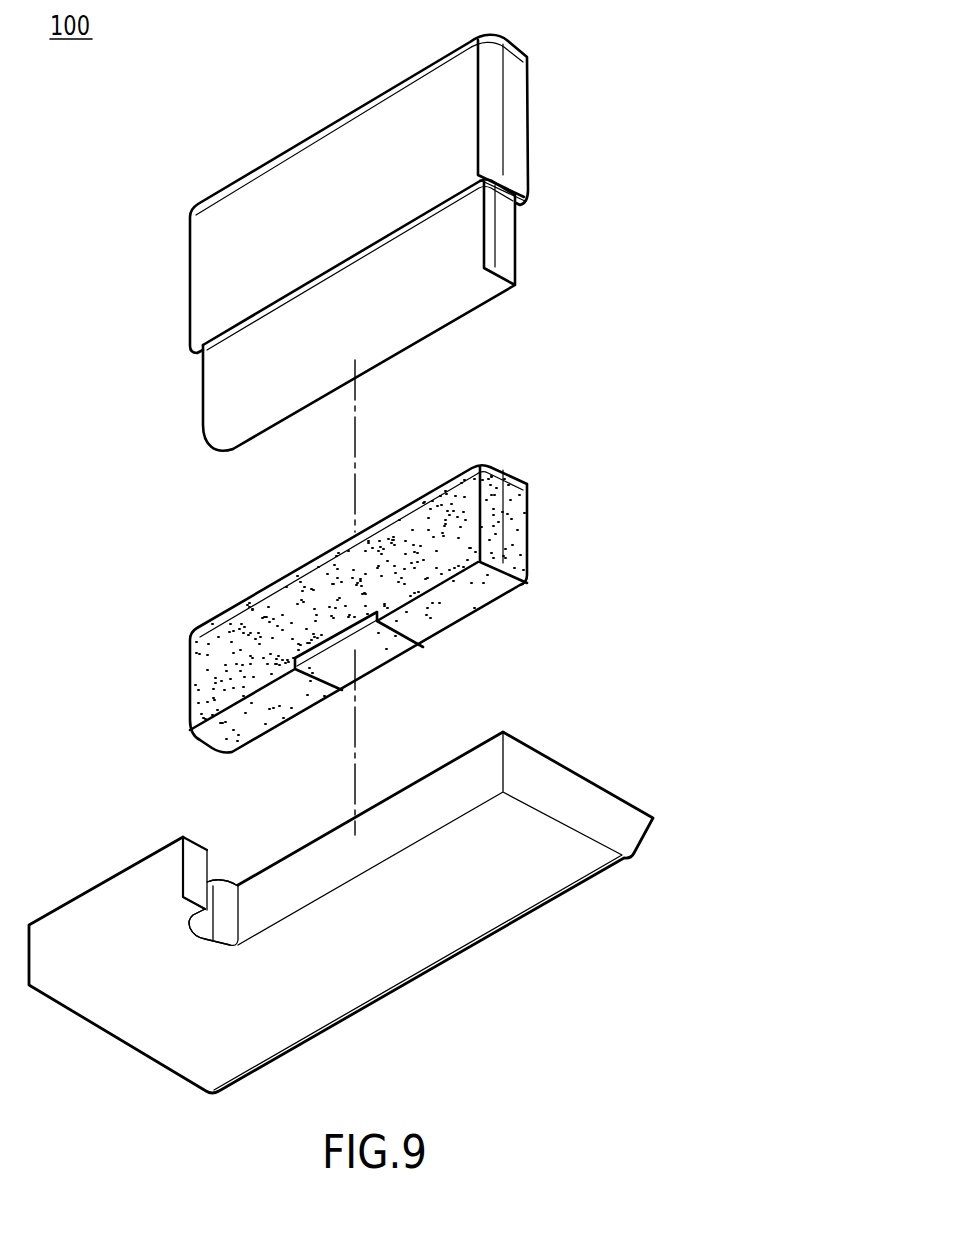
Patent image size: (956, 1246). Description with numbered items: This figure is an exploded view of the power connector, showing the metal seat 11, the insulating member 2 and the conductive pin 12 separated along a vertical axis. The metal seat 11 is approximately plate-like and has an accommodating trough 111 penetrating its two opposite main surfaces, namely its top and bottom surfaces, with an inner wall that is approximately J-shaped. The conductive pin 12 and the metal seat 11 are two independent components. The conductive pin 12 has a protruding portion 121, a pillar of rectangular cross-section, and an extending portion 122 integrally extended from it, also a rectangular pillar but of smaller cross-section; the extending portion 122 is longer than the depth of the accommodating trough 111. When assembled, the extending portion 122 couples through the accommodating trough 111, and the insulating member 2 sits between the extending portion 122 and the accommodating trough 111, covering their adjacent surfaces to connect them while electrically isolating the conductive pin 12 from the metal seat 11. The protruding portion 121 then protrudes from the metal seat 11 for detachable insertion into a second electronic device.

The metal seat 11 is at (341, 895).
The accommodating trough 111 is at (262, 900).
The conductive pin 12 is at (431, 243).
The protruding portion 121 is at (513, 130).
The extending portion 122 is at (503, 235).
The insulating member 2 is at (512, 521).